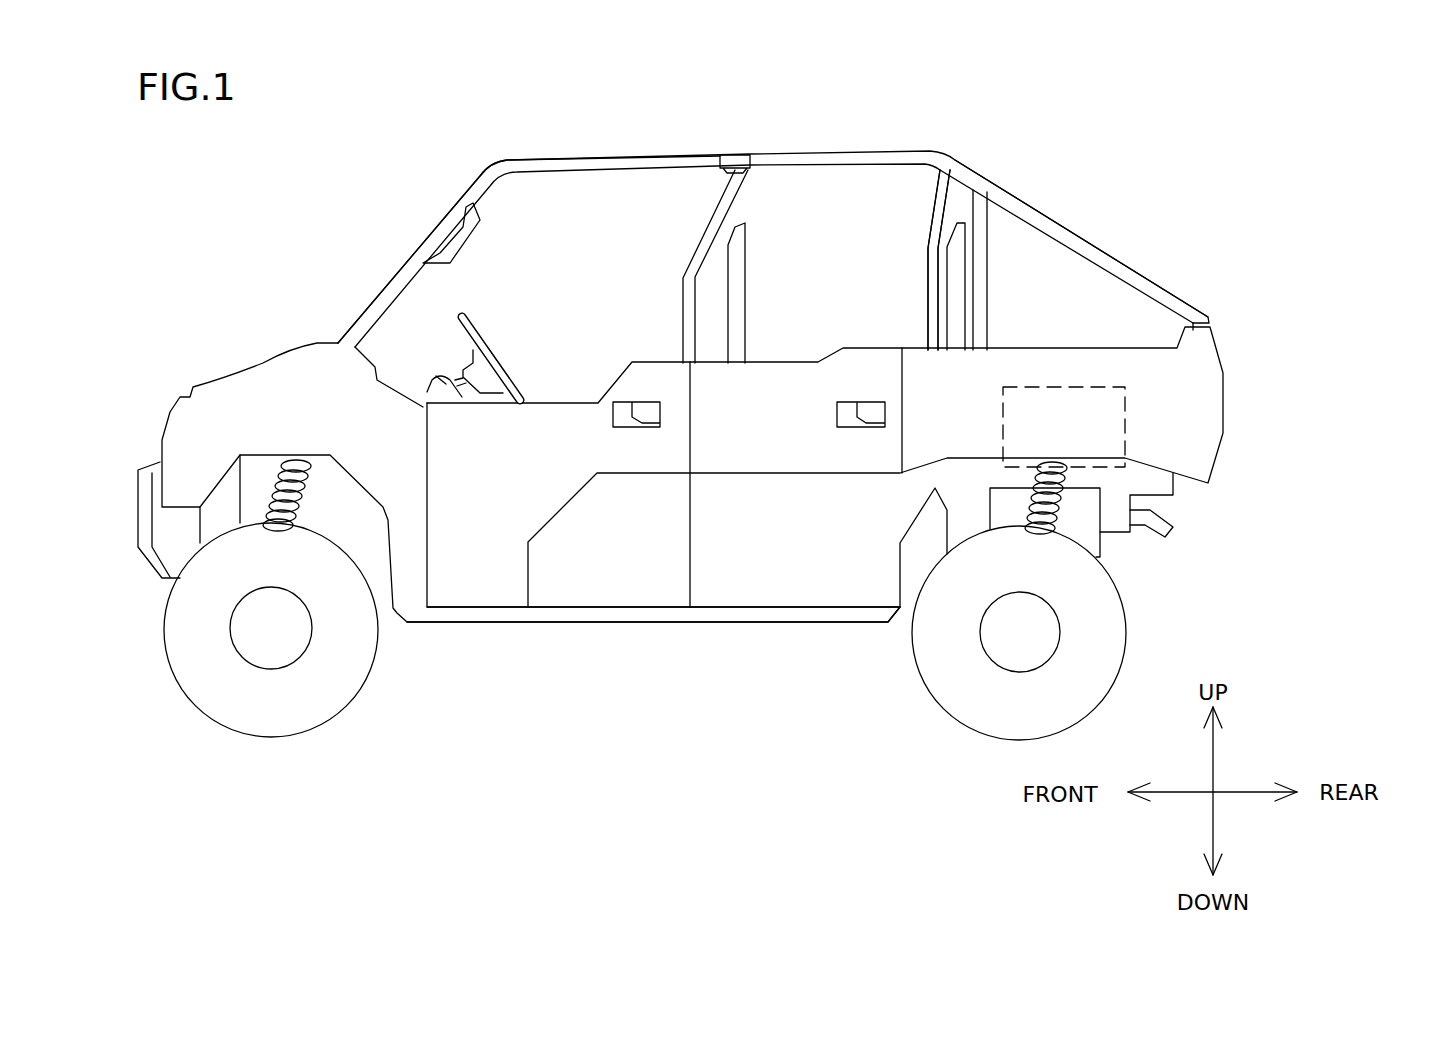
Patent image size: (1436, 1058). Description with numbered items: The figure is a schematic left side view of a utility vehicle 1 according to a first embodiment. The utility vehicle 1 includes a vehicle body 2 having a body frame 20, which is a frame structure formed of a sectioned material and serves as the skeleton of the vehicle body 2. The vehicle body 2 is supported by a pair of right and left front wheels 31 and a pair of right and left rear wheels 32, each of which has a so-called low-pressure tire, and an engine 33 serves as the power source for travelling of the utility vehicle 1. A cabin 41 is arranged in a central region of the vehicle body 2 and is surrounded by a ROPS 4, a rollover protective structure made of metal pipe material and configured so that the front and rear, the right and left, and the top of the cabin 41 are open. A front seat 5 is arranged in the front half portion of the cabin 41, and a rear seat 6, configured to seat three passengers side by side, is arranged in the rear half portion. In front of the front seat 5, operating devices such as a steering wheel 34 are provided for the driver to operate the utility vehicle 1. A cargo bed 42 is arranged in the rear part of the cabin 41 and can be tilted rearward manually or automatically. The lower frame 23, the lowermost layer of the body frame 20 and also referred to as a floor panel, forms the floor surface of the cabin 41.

The utility vehicle 1 is at (1330, 120).
The vehicle body 2 is at (1237, 277).
The ROPS 4 is at (885, 160).
The front seat 5 is at (750, 227).
The rear seat 6 is at (963, 238).
The body frame 20 is at (840, 627).
The lower frame 23 is at (750, 620).
The front wheels 31 is at (353, 630).
The rear wheels 32 is at (1093, 593).
The engine 33 is at (1125, 403).
The steering wheel 34 is at (460, 323).
The cabin 41 is at (613, 215).
The cargo bed 42 is at (1037, 348).